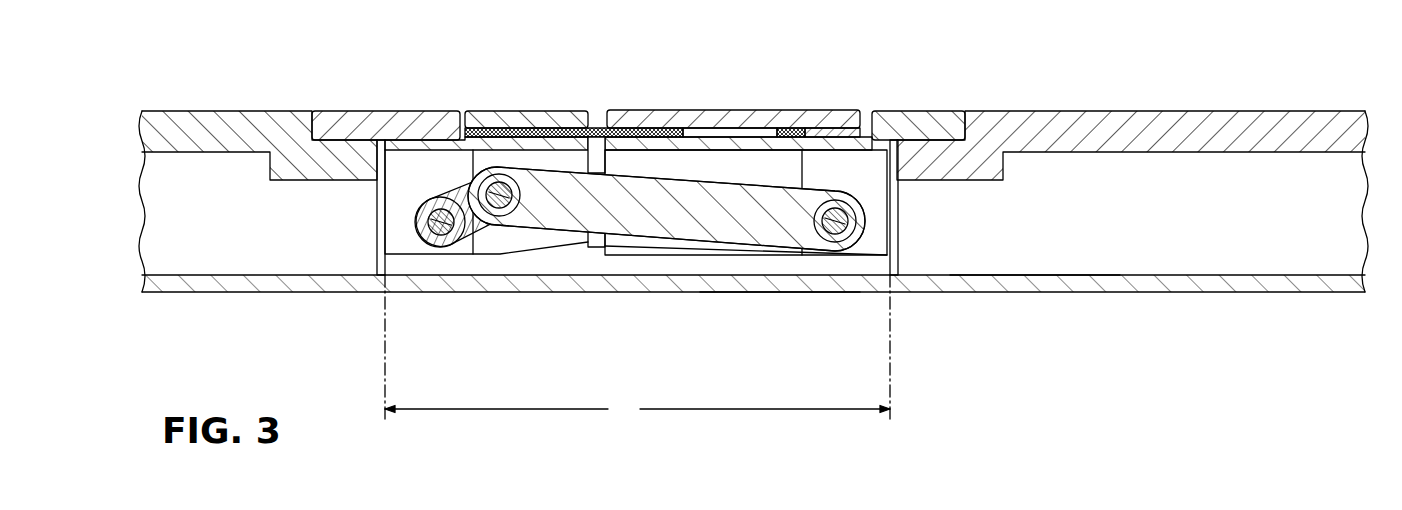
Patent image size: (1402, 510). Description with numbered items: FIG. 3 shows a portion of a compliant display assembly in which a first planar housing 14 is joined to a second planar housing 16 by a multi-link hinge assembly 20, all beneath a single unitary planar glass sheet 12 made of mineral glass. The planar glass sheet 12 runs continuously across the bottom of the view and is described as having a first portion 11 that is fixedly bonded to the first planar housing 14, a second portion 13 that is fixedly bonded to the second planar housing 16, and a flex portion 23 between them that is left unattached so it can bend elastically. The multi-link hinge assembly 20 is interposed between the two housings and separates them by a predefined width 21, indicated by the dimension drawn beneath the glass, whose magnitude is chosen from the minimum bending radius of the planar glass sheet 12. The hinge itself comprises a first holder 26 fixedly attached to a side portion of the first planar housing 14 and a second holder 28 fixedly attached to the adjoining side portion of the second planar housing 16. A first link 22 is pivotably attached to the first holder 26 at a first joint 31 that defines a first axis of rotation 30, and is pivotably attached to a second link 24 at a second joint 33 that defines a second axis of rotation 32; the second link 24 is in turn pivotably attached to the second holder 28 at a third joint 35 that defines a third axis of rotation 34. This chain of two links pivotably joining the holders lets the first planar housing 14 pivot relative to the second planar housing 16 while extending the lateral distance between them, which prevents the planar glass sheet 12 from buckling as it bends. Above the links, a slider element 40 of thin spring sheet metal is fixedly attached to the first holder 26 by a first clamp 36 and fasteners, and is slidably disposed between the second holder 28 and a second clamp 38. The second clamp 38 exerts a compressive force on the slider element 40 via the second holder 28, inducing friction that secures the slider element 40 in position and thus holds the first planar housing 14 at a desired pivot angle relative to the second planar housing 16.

The first portion 11 is at (323, 293).
The planar glass sheet 12 is at (1040, 282).
The second portion 13 is at (1095, 293).
The first planar housing 14 is at (253, 263).
The second planar housing 16 is at (1108, 262).
The multi-link hinge assembly 20 is at (632, 163).
The predefined width 21 is at (637, 349).
The first link 22 is at (450, 252).
The flex portion 23 is at (782, 293).
The second link 24 is at (750, 233).
The first holder 26 is at (437, 124).
The second holder 28 is at (907, 118).
The first axis of rotation 30 is at (419, 215).
The first joint 31 is at (378, 222).
The second axis of rotation 32 is at (507, 203).
The second joint 33 is at (560, 250).
The third axis of rotation 34 is at (848, 216).
The third joint 35 is at (895, 223).
The first clamp 36 is at (533, 120).
The second clamp 38 is at (787, 116).
The slider element 40 is at (592, 131).